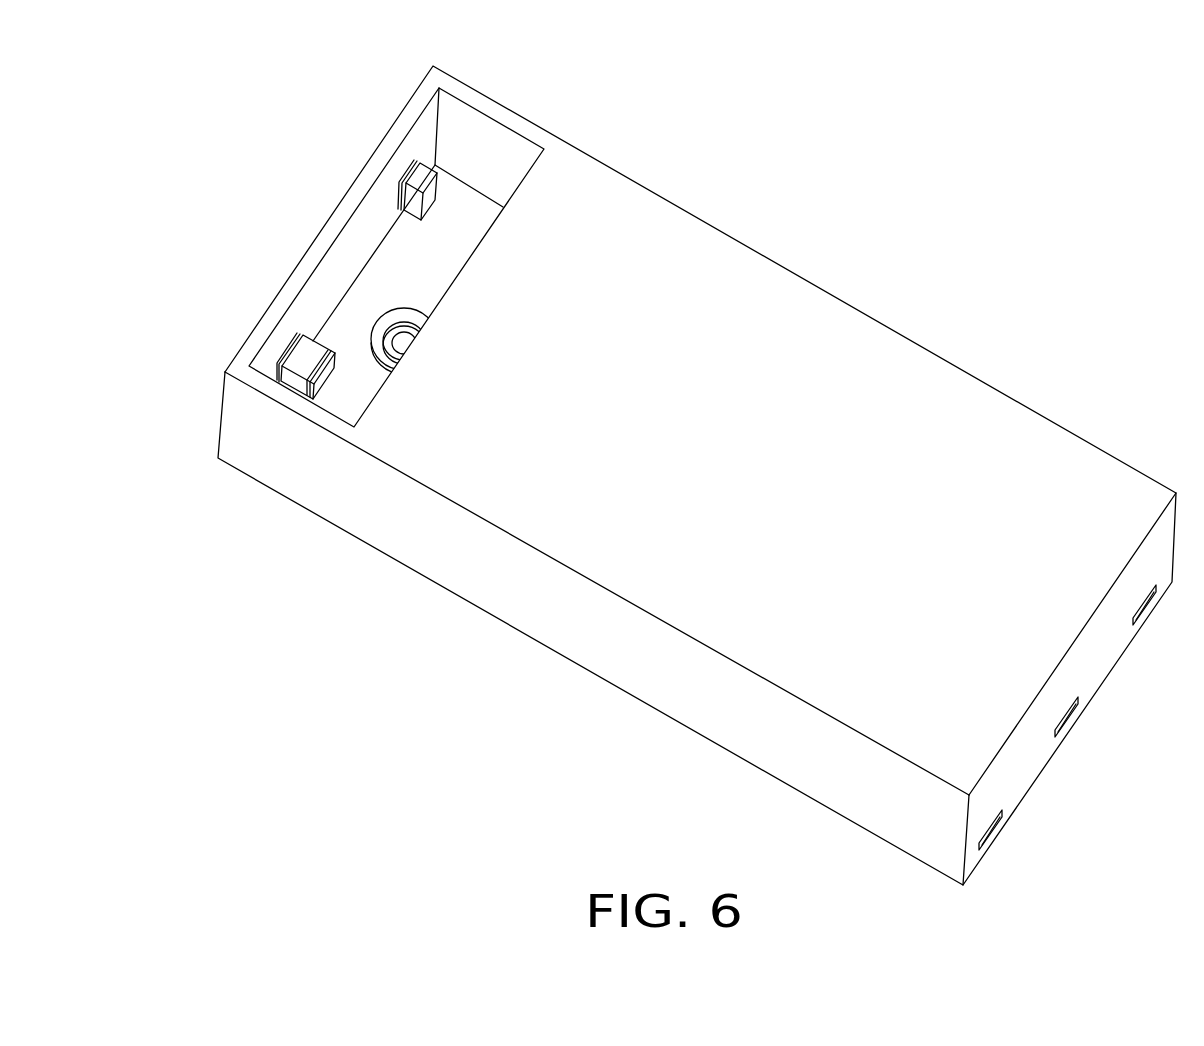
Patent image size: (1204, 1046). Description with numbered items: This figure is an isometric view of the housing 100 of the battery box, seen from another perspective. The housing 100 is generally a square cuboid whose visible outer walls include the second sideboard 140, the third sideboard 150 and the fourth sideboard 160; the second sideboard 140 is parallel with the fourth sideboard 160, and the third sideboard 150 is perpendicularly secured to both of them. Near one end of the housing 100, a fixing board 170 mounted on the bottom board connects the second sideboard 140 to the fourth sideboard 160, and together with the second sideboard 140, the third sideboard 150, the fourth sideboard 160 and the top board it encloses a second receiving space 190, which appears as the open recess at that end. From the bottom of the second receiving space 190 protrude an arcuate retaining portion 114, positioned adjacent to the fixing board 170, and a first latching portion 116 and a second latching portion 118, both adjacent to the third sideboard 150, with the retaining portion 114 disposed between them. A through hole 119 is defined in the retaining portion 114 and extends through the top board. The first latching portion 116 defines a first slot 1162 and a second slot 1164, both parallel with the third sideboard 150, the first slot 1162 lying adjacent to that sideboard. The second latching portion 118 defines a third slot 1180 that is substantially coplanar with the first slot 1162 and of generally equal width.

The housing 100 is at (855, 400).
The fourth sideboard 160 is at (448, 540).
The third sideboard 150 is at (317, 251).
The second sideboard 140 is at (469, 145).
The second receiving space 190 is at (460, 230).
The fixing board 170 is at (447, 283).
The second latching portion 118 is at (420, 166).
The third slot 1180 is at (404, 188).
The first latching portion 116 is at (312, 358).
The first slot 1162 is at (302, 352).
The second slot 1164 is at (312, 390).
The retaining portion 114 is at (410, 310).
The through hole 119 is at (402, 340).